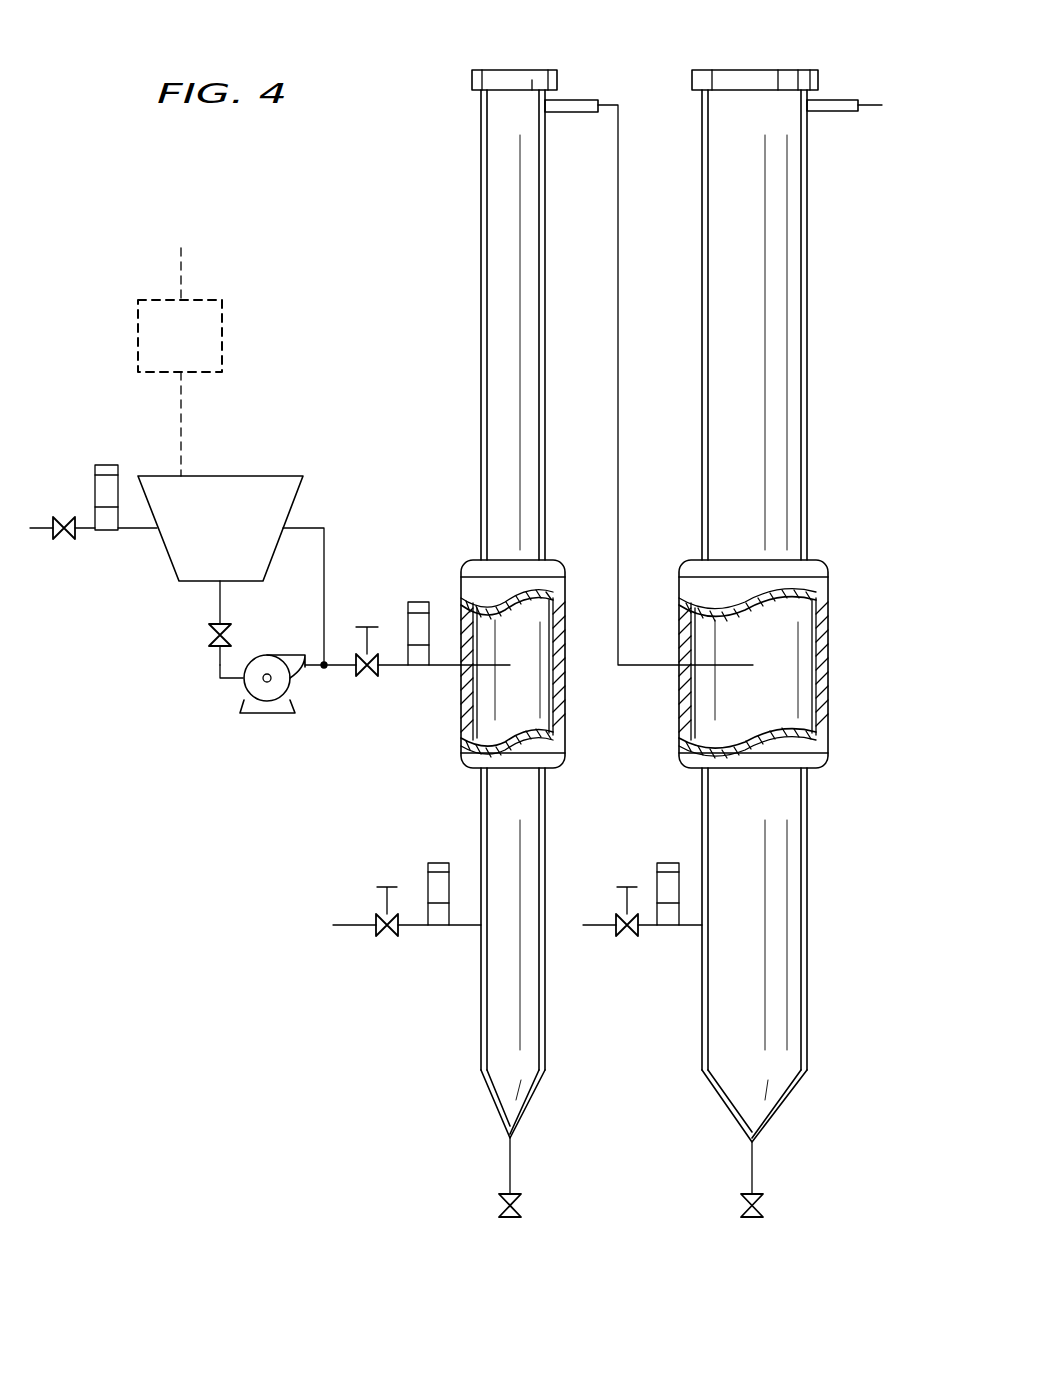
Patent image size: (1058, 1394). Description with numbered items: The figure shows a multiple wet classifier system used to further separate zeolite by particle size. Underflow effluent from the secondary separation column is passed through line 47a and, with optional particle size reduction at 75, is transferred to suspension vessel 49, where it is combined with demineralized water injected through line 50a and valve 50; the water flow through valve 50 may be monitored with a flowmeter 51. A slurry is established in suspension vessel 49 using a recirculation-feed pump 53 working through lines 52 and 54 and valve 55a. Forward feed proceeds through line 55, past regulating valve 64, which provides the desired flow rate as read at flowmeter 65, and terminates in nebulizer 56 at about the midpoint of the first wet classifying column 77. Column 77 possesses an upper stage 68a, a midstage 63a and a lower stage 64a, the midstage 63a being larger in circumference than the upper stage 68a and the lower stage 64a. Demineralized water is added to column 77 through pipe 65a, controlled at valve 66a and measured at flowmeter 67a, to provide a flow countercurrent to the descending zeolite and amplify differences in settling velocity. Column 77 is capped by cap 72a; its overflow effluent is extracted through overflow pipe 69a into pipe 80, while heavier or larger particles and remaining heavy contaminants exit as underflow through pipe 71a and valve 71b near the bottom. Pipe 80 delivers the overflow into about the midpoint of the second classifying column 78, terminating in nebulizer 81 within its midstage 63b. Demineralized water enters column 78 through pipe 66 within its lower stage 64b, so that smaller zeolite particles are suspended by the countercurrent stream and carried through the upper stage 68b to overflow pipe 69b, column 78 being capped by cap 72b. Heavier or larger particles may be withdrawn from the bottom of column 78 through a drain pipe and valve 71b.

The line 47a is at (181, 272).
The particle size reduction 75 is at (138, 322).
The suspension vessel 49 is at (220, 476).
The flowmeter 51 is at (107, 465).
The line 50a is at (45, 528).
The valve 50 is at (64, 539).
The line 54 is at (324, 597).
The valve 55a is at (209, 635).
The line 52 is at (220, 665).
The recirculation-feed pump 53 is at (267, 713).
The line 55 is at (334, 665).
The regulating valve 64 is at (360, 627).
The flowmeter 65 is at (418, 602).
The first wet classifying column 77 is at (505, 68).
The cap 72a is at (535, 70).
The upper stage 68a is at (545, 330).
The overflow pipe 69a is at (580, 100).
The pipe 80 is at (618, 386).
The midstage 63a is at (461, 695).
The nebulizer 56 is at (520, 676).
The lower stage 64a is at (545, 972).
The pipe 65a is at (340, 925).
The valve 66a is at (380, 887).
The flowmeter 67a is at (438, 863).
The pipe 71a is at (510, 1165).
The valve 71b is at (521, 1205).
The second classifying column 78 is at (745, 68).
The cap 72b is at (789, 70).
The upper stage 68b is at (807, 330).
The overflow pipe 69b is at (840, 100).
The midstage 63b is at (679, 695).
The nebulizer 81 is at (763, 676).
The lower stage 64b is at (807, 972).
The pipe 66 is at (592, 925).